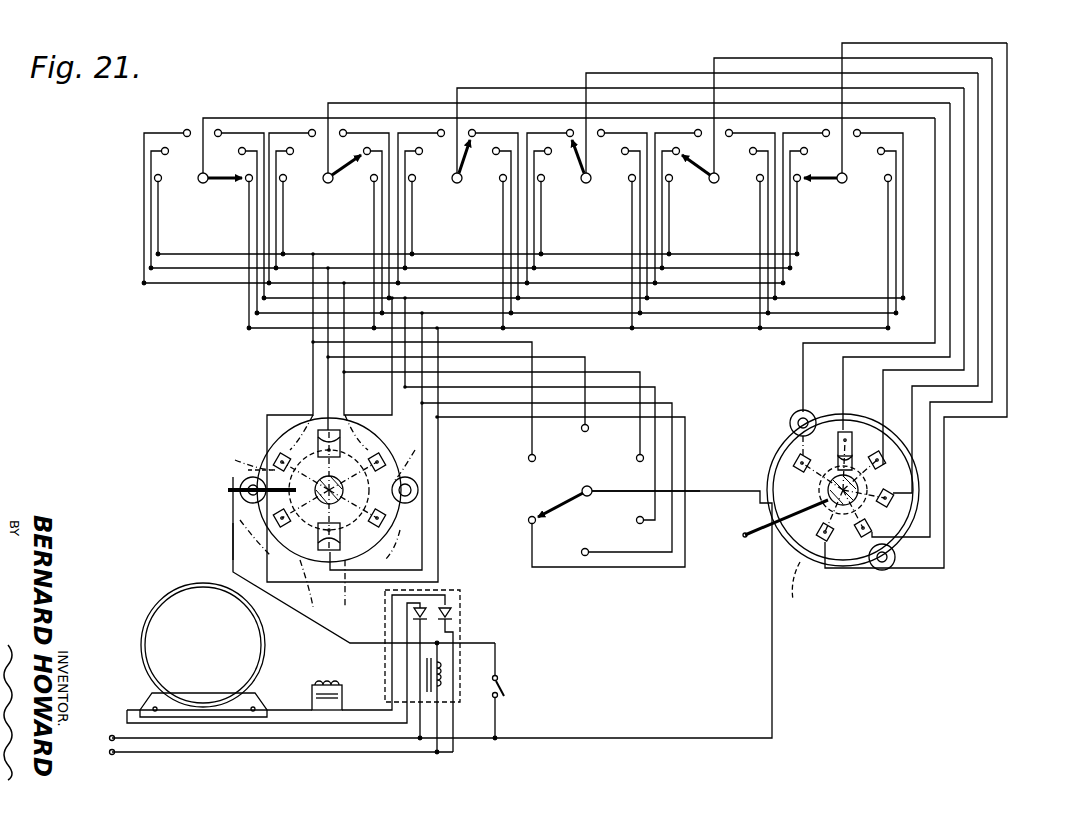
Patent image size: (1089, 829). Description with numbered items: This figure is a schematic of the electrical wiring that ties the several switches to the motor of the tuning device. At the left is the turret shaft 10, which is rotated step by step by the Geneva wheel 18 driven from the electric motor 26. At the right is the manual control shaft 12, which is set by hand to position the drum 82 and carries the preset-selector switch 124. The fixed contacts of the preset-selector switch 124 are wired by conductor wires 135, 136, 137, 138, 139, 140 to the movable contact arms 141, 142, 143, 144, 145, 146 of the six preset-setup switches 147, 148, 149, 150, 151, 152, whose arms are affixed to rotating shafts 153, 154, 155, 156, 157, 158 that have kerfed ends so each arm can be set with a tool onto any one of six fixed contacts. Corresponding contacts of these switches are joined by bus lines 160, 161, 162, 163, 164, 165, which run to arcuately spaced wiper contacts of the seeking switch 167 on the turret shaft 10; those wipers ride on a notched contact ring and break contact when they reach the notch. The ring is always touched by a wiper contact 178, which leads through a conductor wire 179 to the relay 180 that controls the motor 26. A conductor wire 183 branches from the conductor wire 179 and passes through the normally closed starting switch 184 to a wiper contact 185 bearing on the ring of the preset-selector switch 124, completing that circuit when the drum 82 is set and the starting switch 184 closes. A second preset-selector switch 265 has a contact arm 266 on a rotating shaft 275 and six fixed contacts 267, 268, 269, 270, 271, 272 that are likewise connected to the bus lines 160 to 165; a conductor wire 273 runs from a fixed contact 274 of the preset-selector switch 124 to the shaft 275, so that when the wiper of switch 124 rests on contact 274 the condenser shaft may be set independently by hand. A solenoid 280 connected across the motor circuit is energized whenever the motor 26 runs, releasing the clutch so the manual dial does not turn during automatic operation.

The turret shaft 10 is at (315, 480).
The manual control shaft 12 is at (855, 483).
The Geneva wheel 18 is at (233, 523).
The electric motor 26 is at (175, 610).
The drum 82 is at (790, 593).
The preset-selector switch 124 is at (921, 510).
The conductor wire 135 is at (803, 372).
The conductor wire 136 is at (852, 386).
The conductor wire 137 is at (966, 297).
The conductor wire 138 is at (980, 317).
The conductor wire 139 is at (994, 350).
The conductor wire 140 is at (1009, 387).
The movable contact arm 141 is at (218, 172).
The movable contact arm 142 is at (332, 172).
The movable contact arm 143 is at (460, 172).
The movable contact arm 144 is at (588, 172).
The movable contact arm 145 is at (709, 181).
The movable contact arm 146 is at (823, 182).
The preset-setup switch 147 is at (206, 186).
The preset-setup switch 148 is at (334, 186).
The preset-setup switch 149 is at (462, 186).
The preset-setup switch 150 is at (592, 186).
The preset-setup switch 151 is at (716, 188).
The preset-setup switch 152 is at (846, 188).
The rotating shaft 153 is at (198, 181).
The rotating shaft 154 is at (324, 182).
The rotating shaft 155 is at (452, 181).
The rotating shaft 156 is at (582, 181).
The rotating shaft 157 is at (721, 183).
The rotating shaft 158 is at (858, 184).
The bus line 160 is at (168, 256).
The bus line 161 is at (182, 270).
The bus line 162 is at (226, 285).
The bus line 163 is at (676, 300).
The bus line 164 is at (727, 315).
The bus line 165 is at (778, 330).
The seeking switch 167 is at (247, 470).
The wiper contact 178 is at (228, 492).
The conductor wire 179 is at (313, 623).
The relay 180 is at (463, 640).
The conductor wire 183 is at (636, 738).
The starting switch 184 is at (501, 677).
The wiper contact 185 is at (776, 518).
The preset-selector switch 265 is at (600, 509).
The contact arm 266 is at (572, 505).
The fixed contact 267 is at (528, 462).
The fixed contact 268 is at (583, 434).
The fixed contact 269 is at (645, 456).
The fixed contact 270 is at (642, 524).
The fixed contact 271 is at (582, 556).
The fixed contact 272 is at (527, 522).
The conductor wire 273 is at (702, 490).
The fixed contact 274 is at (795, 460).
The rotating shaft 275 is at (564, 492).
The solenoid 280 is at (342, 690).